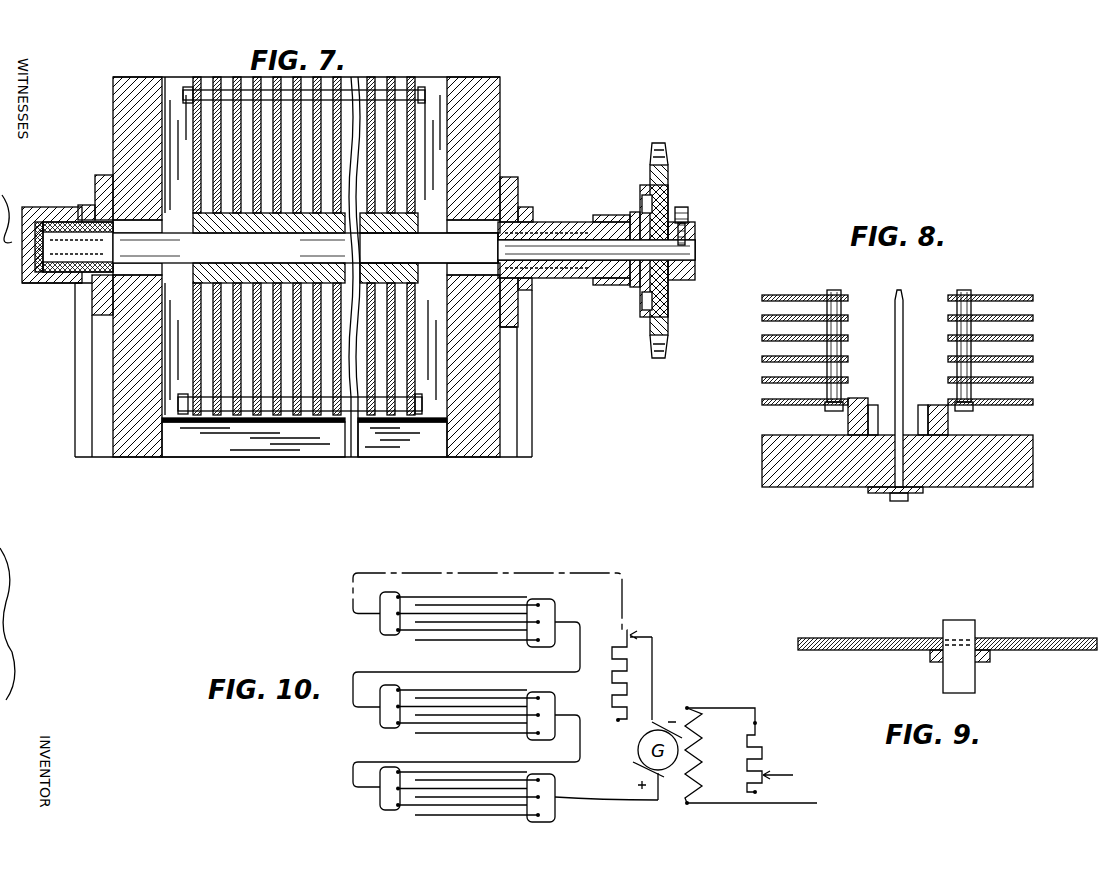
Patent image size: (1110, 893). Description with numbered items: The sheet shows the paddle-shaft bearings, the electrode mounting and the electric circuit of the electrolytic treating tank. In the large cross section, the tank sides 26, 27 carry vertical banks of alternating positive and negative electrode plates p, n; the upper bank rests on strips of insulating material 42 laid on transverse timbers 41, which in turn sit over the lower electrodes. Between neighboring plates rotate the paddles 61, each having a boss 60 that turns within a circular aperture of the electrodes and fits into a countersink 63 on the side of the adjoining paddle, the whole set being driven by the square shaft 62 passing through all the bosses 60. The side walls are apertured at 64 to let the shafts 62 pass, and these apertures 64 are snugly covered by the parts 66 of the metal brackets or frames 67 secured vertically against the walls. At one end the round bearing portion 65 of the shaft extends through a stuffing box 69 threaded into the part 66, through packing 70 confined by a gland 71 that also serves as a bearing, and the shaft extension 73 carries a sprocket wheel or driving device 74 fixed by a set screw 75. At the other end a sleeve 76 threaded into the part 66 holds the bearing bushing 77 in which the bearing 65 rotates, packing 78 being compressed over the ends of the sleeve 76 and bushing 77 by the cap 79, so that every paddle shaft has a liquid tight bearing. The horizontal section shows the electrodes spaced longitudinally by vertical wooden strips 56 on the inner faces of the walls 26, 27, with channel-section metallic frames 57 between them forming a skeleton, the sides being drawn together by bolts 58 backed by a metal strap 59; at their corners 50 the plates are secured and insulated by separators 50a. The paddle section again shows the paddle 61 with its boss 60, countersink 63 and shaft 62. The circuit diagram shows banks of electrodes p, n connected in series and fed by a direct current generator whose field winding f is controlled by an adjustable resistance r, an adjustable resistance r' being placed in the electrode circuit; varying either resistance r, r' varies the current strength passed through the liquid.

In FIG. 7, the side of tank 27 is at (113, 97).
In FIG. 7, the side of tank 26 is at (503, 117).
In FIG. 8, the side of tank 26 is at (965, 487).
In FIG. 7, the parts of metal brackets 66 is at (99, 176).
In FIG. 7, the bearing bushing 77 is at (55, 212).
In FIG. 7, the packing 78 is at (38, 250).
In FIG. 7, the cap 79 is at (33, 283).
In FIG. 7, the round end bearing portions 65 is at (57, 272).
In FIG. 7, the sleeve 76 is at (78, 283).
In FIG. 7, the metal brackets or frames 67 is at (88, 410).
In FIG. 7, the shaft 62 is at (305, 247).
In FIG. 9, the shaft 62 is at (943, 683).
In FIG. 7, the apertures in side walls 64 is at (466, 230).
In FIG. 7, the bosses 60 is at (420, 272).
In FIG. 9, the bosses 60 is at (980, 662).
In FIG. 7, the paddles 61 is at (235, 205).
In FIG. 9, the paddles 61 is at (1048, 637).
In FIG. 7, the countersink 63 is at (418, 215).
In FIG. 9, the countersink 63 is at (978, 638).
In FIG. 7, the negative electrode plates n is at (220, 80).
In FIG. 8, the negative electrode plates n is at (794, 297).
In FIG. 10, the negative electrode plates n is at (455, 630).
In FIG. 7, the positive electrode plates p is at (196, 128).
In FIG. 8, the positive electrode plates p is at (762, 319).
In FIG. 10, the positive electrode plates p is at (528, 640).
In FIG. 7, the transverse timbers or strips 41 is at (304, 439).
In FIG. 7, the strips of insulating material 42 is at (316, 422).
In FIG. 7, the stuffing boxes 69 is at (560, 225).
In FIG. 7, the gland 71 is at (590, 225).
In FIG. 7, the packing 70 is at (545, 280).
In FIG. 7, the sprocket wheel or driving device 74 is at (670, 172).
In FIG. 7, the extension 73 is at (690, 250).
In FIG. 7, the set screw 75 is at (690, 210).
In FIG. 8, the bolts 58 is at (904, 302).
In FIG. 8, the metal strap 59 is at (878, 494).
In FIG. 8, the corners of the electrode plates 50 is at (833, 412).
In FIG. 8, the separators 50a is at (847, 328).
In FIG. 8, the vertically disposed strips 56 is at (857, 398).
In FIG. 8, the metallic frames 57 is at (874, 410).
In FIG. 10, the adjustable resistance r' is at (617, 676).
In FIG. 10, the field winding f is at (701, 739).
In FIG. 10, the adjustable resistance r is at (770, 757).